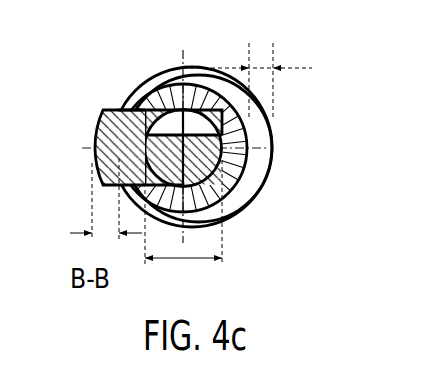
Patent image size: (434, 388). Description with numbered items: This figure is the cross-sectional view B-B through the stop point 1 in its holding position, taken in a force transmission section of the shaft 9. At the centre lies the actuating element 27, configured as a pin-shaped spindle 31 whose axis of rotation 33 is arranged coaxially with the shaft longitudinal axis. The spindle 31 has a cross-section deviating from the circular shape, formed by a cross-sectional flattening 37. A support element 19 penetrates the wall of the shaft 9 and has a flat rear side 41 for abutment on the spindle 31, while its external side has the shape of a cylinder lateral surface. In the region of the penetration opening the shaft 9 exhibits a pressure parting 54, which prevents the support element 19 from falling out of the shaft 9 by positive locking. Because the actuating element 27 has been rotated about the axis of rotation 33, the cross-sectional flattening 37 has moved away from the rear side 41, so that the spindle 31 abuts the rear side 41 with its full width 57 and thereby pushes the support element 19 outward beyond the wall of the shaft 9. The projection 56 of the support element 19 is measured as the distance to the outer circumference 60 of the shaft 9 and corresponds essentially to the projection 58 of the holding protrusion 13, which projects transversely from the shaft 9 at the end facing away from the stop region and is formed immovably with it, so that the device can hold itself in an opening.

The stop point 1 is at (232, 179).
The shaft 9 is at (245, 117).
The holding protrusion 13 is at (257, 168).
The support element 19 is at (100, 112).
The actuating element 27 is at (232, 151).
The spindle 31 is at (248, 205).
The axis of rotation 33 is at (236, 146).
The cross-sectional flattening 37 is at (186, 137).
The rear side 41 is at (151, 88).
The pressure parting 54 is at (127, 108).
The projection of the support elements 56 is at (107, 233).
The full width 57 is at (195, 258).
The projection of the holding protrusion 58 is at (247, 77).
The outer circumference 60 is at (188, 68).